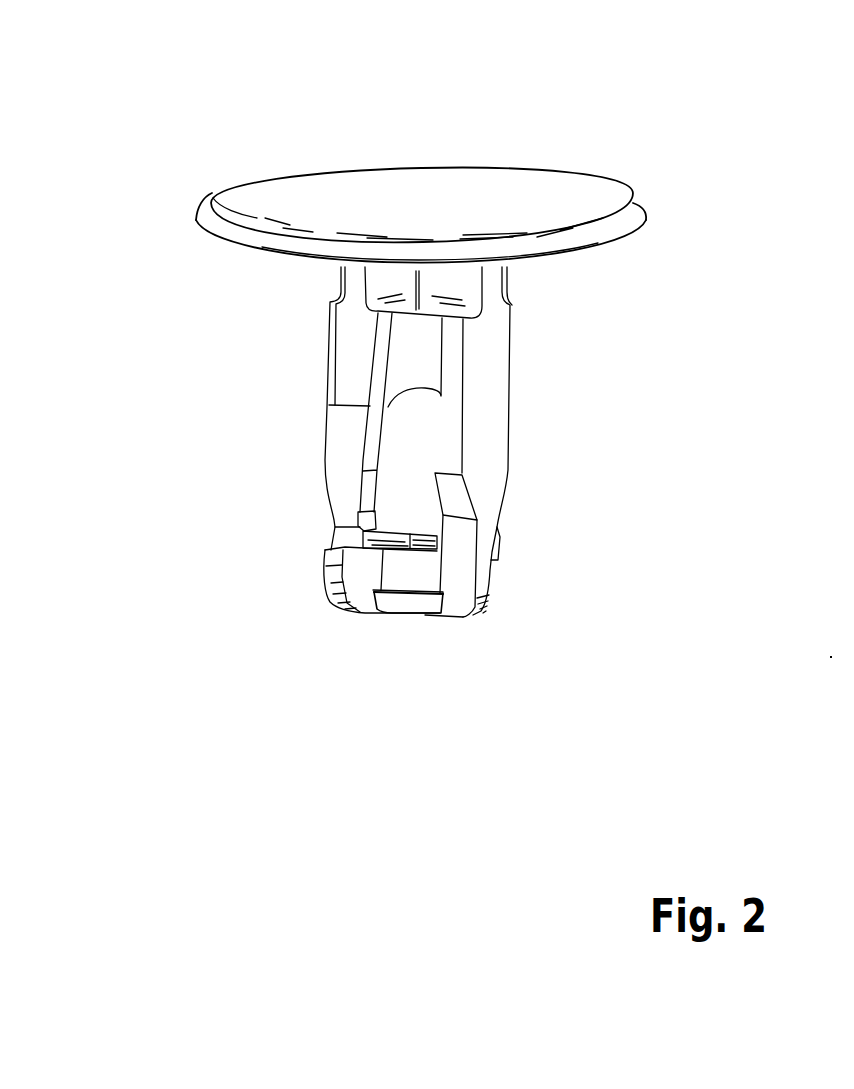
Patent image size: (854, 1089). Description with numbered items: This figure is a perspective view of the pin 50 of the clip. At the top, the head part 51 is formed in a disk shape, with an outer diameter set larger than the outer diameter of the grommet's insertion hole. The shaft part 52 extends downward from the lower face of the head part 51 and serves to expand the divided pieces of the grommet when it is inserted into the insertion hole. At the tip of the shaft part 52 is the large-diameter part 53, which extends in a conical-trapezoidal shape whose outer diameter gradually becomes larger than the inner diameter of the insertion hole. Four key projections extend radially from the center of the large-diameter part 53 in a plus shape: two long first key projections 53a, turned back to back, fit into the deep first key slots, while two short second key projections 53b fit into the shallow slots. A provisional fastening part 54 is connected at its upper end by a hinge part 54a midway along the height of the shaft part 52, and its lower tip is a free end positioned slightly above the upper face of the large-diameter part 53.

The pin 50 is at (170, 122).
The head part 51 is at (618, 221).
The shaft part 52 is at (500, 378).
The large-diameter part 53 is at (414, 604).
The first key projections 53a is at (325, 578).
The second key projections 53b is at (476, 568).
The provisional fastening part 54 is at (328, 457).
The hinge part 54a is at (338, 424).